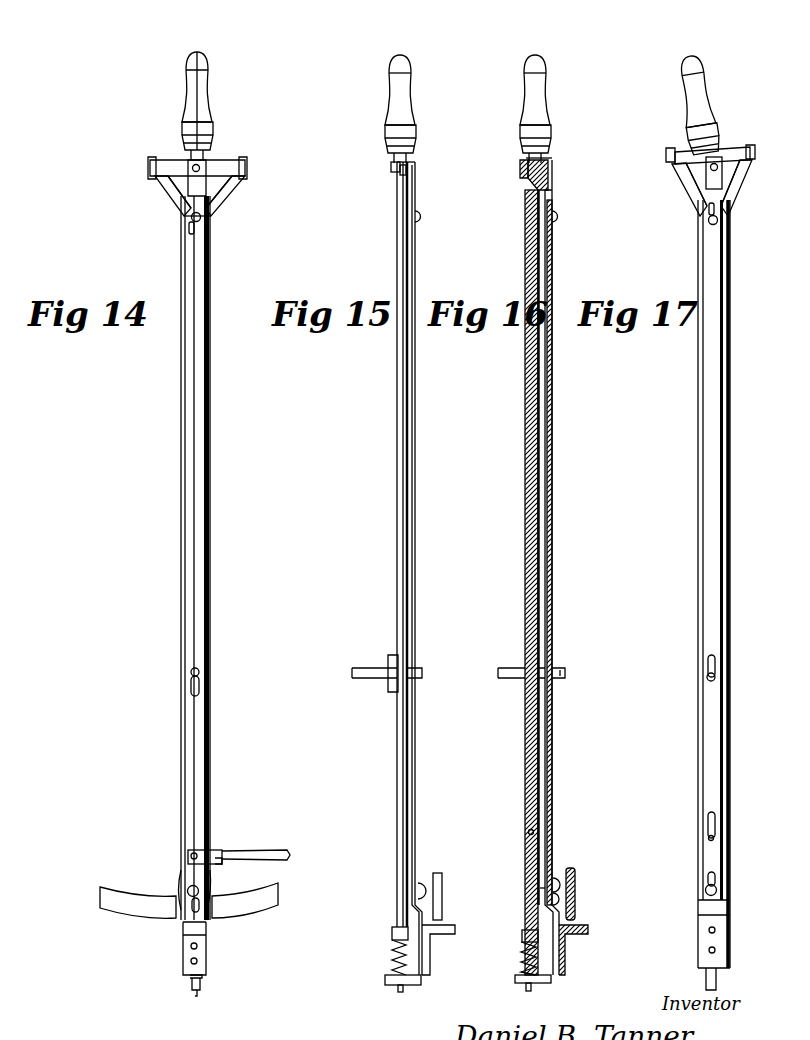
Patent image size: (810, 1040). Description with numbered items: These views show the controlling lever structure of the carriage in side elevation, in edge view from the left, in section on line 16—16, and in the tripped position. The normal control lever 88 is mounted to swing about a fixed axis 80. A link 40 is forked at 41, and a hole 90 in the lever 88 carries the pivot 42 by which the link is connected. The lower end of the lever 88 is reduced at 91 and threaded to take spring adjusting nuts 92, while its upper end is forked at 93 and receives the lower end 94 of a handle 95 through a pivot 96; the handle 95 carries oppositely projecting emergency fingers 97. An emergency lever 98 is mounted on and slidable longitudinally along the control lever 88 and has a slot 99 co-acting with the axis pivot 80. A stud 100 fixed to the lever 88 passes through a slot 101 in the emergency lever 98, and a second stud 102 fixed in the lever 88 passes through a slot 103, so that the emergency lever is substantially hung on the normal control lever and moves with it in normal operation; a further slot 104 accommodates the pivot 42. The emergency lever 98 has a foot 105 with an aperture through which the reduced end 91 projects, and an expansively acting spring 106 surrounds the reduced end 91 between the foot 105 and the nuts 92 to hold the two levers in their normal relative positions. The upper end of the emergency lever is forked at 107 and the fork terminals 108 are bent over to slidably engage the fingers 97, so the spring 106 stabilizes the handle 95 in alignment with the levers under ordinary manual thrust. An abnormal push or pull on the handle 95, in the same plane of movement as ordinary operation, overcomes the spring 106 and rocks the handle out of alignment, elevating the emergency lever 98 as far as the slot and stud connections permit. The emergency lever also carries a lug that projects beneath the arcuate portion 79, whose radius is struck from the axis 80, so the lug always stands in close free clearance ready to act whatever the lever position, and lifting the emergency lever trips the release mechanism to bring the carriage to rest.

In FIG. 14, the section line 16 is at (196, 52).
In FIG. 14, the handle 95 is at (209, 94).
In FIG. 15, the handle 95 is at (412, 93).
In FIG. 16, the handle 95 is at (547, 93).
In FIG. 17, the handle 95 is at (713, 89).
In FIG. 14, the pivot 96 is at (187, 163).
In FIG. 16, the pivot 96 is at (521, 168).
In FIG. 17, the pivot 96 is at (722, 167).
In FIG. 14, the emergency fingers 97 is at (222, 170).
In FIG. 15, the emergency fingers 97 is at (402, 173).
In FIG. 17, the emergency fingers 97 is at (672, 184).
In FIG. 14, the fork 107 is at (190, 196).
In FIG. 17, the fork 107 is at (700, 197).
In FIG. 14, the emergency lever 98 is at (200, 499).
In FIG. 15, the emergency lever 98 is at (416, 499).
In FIG. 16, the emergency lever 98 is at (552, 499).
In FIG. 17, the emergency lever 98 is at (699, 499).
In FIG. 14, the normal control lever 88 is at (182, 637).
In FIG. 15, the normal control lever 88 is at (397, 605).
In FIG. 16, the normal control lever 88 is at (526, 605).
In FIG. 17, the normal control lever 88 is at (698, 594).
In FIG. 14, the stud 102 is at (202, 218).
In FIG. 15, the stud 102 is at (421, 218).
In FIG. 17, the stud 102 is at (708, 221).
In FIG. 14, the slot 103 is at (196, 232).
In FIG. 17, the slot 103 is at (718, 211).
In FIG. 14, the fixed axis 80 is at (190, 673).
In FIG. 15, the fixed axis 80 is at (380, 674).
In FIG. 16, the fixed axis 80 is at (510, 674).
In FIG. 17, the fixed axis 80 is at (707, 678).
In FIG. 14, the slot 99 is at (200, 687).
In FIG. 16, the slot 99 is at (562, 678).
In FIG. 17, the slot 99 is at (716, 665).
In FIG. 14, the pivot 42 is at (193, 854).
In FIG. 17, the pivot 42 is at (708, 842).
In FIG. 14, the forked end 41 is at (215, 857).
In FIG. 14, the link 40 is at (270, 854).
In FIG. 14, the stud 100 is at (189, 888).
In FIG. 15, the stud 100 is at (426, 889).
In FIG. 16, the stud 100 is at (549, 857).
In FIG. 17, the stud 100 is at (705, 891).
In FIG. 14, the slot 101 is at (200, 902).
In FIG. 16, the slot 101 is at (540, 892).
In FIG. 17, the slot 101 is at (716, 880).
In FIG. 14, the arcuate portion 79 is at (258, 912).
In FIG. 15, the arcuate portion 79 is at (444, 900).
In FIG. 16, the arcuate portion 79 is at (577, 896).
In FIG. 14, the fork terminals 108 is at (183, 929).
In FIG. 15, the fork terminals 108 is at (391, 168).
In FIG. 16, the fork terminals 108 is at (580, 936).
In FIG. 17, the fork terminals 108 is at (724, 918).
In FIG. 15, the spring adjusting nuts 92 is at (392, 935).
In FIG. 15, the spring 106 is at (392, 952).
In FIG. 16, the spring 106 is at (521, 960).
In FIG. 15, the foot 105 is at (418, 985).
In FIG. 16, the foot 105 is at (552, 985).
In FIG. 15, the reduced end 91 is at (398, 990).
In FIG. 16, the reduced end 91 is at (529, 988).
In FIG. 17, the reduced end 91 is at (717, 981).
In FIG. 16, the forked end 93 is at (532, 179).
In FIG. 16, the lower end of handle 94 is at (546, 162).
In FIG. 16, the hole 90 is at (526, 837).
In FIG. 17, the slot 104 is at (707, 832).